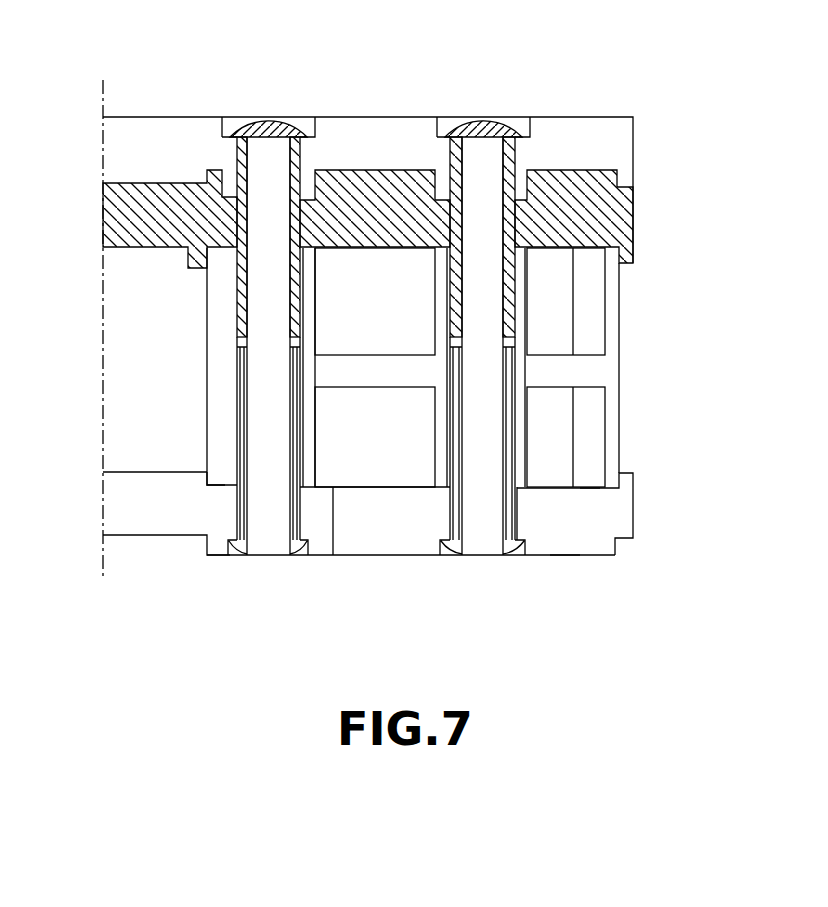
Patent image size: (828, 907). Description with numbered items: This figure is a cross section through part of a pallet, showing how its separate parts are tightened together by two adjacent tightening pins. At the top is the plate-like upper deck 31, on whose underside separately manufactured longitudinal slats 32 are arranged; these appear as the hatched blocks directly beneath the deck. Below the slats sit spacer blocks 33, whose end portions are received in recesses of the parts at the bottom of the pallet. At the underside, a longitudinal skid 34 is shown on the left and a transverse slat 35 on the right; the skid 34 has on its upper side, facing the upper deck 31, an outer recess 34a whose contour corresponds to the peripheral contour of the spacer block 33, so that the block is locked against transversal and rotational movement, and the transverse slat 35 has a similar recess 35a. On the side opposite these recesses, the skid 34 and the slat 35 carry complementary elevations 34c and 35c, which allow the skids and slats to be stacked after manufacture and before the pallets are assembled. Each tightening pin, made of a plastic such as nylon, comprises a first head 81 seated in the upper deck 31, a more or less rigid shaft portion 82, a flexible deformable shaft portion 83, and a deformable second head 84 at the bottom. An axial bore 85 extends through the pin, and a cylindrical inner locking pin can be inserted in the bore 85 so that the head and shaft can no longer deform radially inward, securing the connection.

The upper deck 31 is at (577, 135).
The longitudinal slat 32 is at (615, 203).
The spacer block 33 is at (605, 375).
The longitudinal skid 34 is at (125, 523).
The outer recess 34a is at (223, 485).
The complementary elevation 34c is at (218, 556).
The transverse slat 35 is at (592, 540).
The recess 35a is at (587, 488).
The complementary elevation 35c is at (563, 557).
The first head 81 is at (387, 331).
The rigid shaft portion 82 is at (295, 160).
The flexible deformable shaft portion 83 is at (240, 505).
The deformable second head 84 is at (296, 549).
The axial bore 85 is at (270, 297).